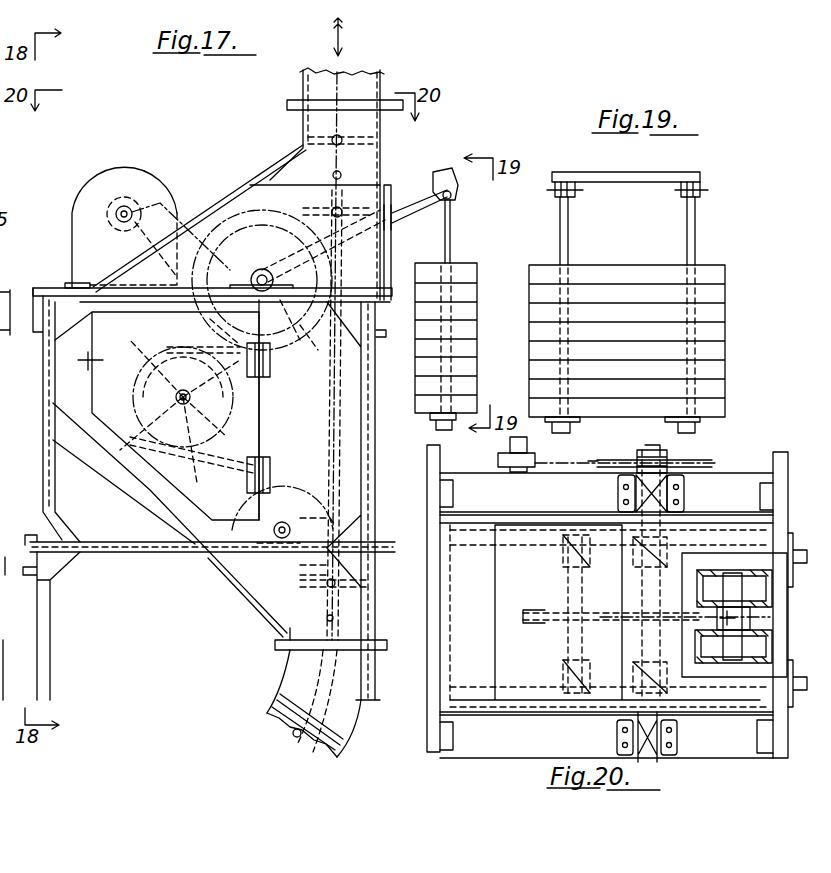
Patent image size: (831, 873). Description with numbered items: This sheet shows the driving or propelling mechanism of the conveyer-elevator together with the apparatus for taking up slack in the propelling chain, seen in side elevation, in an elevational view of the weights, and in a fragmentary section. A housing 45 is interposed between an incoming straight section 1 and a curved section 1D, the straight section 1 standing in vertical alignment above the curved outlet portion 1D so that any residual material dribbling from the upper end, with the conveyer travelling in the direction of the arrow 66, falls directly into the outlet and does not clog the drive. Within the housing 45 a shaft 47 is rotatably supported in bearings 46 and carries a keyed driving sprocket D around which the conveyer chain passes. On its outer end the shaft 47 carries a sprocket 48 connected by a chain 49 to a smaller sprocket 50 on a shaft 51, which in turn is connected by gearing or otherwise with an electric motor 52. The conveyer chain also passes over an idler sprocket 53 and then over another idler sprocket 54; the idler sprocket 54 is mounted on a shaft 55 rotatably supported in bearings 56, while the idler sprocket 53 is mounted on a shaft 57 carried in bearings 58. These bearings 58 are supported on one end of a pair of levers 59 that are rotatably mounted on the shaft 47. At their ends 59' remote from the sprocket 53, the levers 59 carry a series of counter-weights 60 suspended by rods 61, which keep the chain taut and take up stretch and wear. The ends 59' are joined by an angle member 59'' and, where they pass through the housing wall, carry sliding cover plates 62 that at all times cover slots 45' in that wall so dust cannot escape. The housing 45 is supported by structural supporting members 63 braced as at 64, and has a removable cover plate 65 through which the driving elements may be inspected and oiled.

In FIG. 17, the straight section 1 is at (303, 85).
In FIG. 17, the curved section 1D is at (352, 728).
In FIG. 17, the housing 45 is at (219, 494).
In FIG. 20, the housing 45 is at (590, 601).
In FIG. 17, the slots 45' is at (368, 261).
In FIG. 17, the bearings 46 is at (252, 275).
In FIG. 20, the bearings 46 is at (685, 497).
In FIG. 17, the shaft 47 is at (264, 270).
In FIG. 20, the shaft 47 is at (660, 531).
In FIG. 17, the sprocket 48 is at (307, 322).
In FIG. 20, the sprocket 48 is at (712, 462).
In FIG. 17, the chain 49 is at (160, 203).
In FIG. 20, the chain 49 is at (578, 457).
In FIG. 17, the smaller sprocket 50 is at (115, 203).
In FIG. 20, the smaller sprocket 50 is at (500, 460).
In FIG. 17, the shaft 51 is at (121, 218).
In FIG. 20, the shaft 51 is at (527, 445).
In FIG. 17, the electric motor 52 is at (118, 160).
In FIG. 17, the idler sprocket 53 is at (261, 405).
In FIG. 20, the idler sprocket 53 is at (560, 620).
In FIG. 17, the idler sprocket 54 is at (247, 563).
In FIG. 17, the shaft 55 is at (282, 540).
In FIG. 17, the bearings 56 is at (282, 522).
In FIG. 17, the shaft 57 is at (200, 405).
In FIG. 20, the shaft 57 is at (567, 585).
In FIG. 17, the bearings 58 is at (180, 393).
In FIG. 20, the bearings 58 is at (563, 563).
In FIG. 17, the levers 59 is at (248, 418).
In FIG. 20, the levers 59 is at (611, 618).
In FIG. 17, the ends of levers 59' is at (419, 218).
In FIG. 20, the ends of levers 59' is at (805, 616).
In FIG. 17, the angle member 59'' is at (447, 168).
In FIG. 19, the angle member 59'' is at (627, 173).
In FIG. 17, the counter-weights 60 is at (477, 300).
In FIG. 19, the counter-weights 60 is at (725, 299).
In FIG. 17, the rods 61 is at (450, 233).
In FIG. 19, the rods 61 is at (568, 230).
In FIG. 17, the sliding cover plates 62 is at (390, 200).
In FIG. 20, the sliding cover plates 62 is at (797, 705).
In FIG. 17, the structural supporting members 63 is at (55, 488).
In FIG. 17, the bracing 64 is at (88, 286).
In FIG. 17, the removable cover plate 65 is at (218, 196).
In FIG. 20, the removable cover plate 65 is at (502, 630).
In FIG. 17, the arrow 66 is at (353, 37).
In FIG. 17, the driving sprocket D is at (210, 319).
In FIG. 20, the driving sprocket D is at (693, 617).